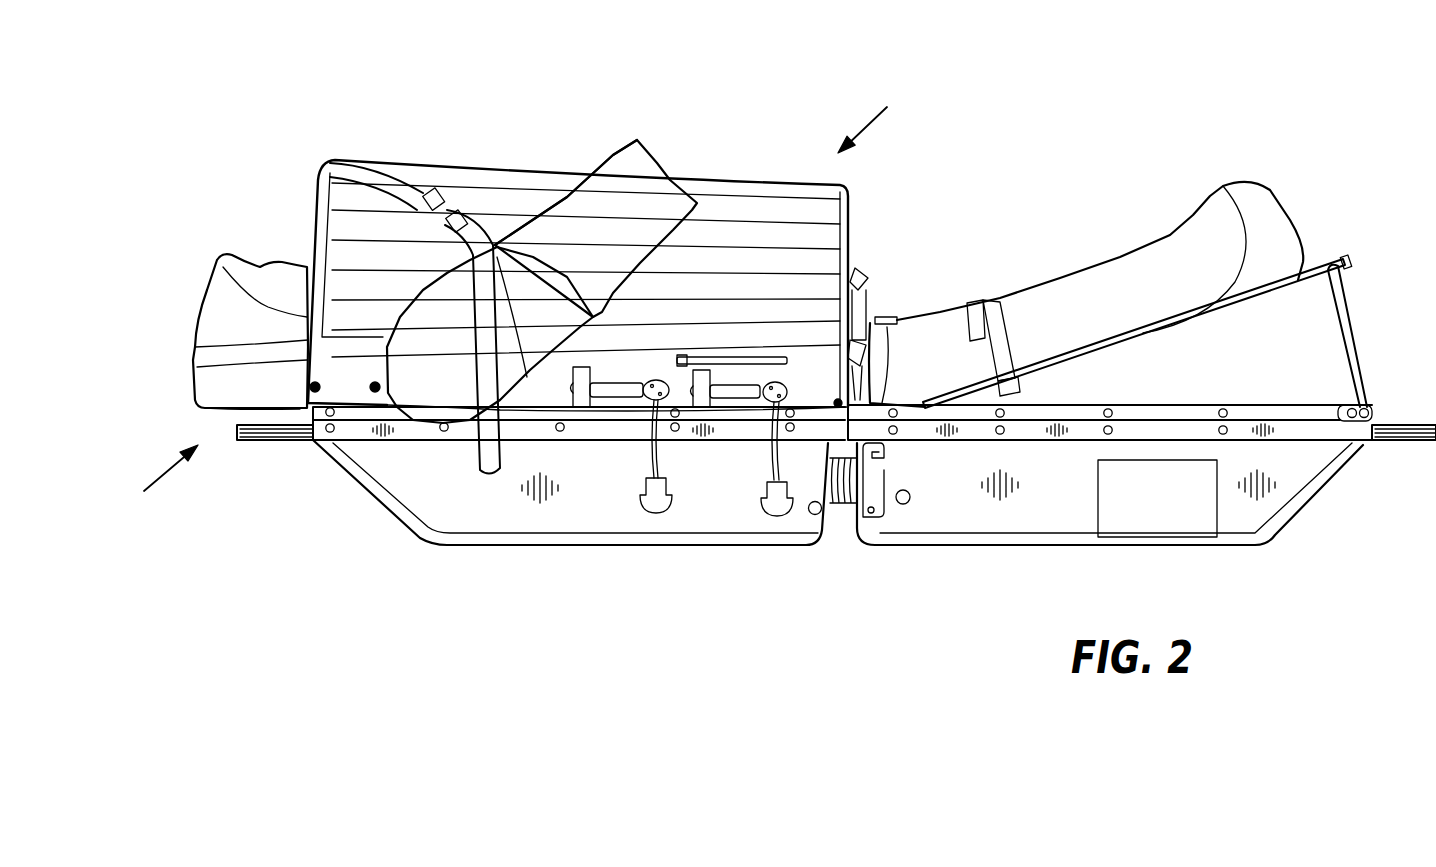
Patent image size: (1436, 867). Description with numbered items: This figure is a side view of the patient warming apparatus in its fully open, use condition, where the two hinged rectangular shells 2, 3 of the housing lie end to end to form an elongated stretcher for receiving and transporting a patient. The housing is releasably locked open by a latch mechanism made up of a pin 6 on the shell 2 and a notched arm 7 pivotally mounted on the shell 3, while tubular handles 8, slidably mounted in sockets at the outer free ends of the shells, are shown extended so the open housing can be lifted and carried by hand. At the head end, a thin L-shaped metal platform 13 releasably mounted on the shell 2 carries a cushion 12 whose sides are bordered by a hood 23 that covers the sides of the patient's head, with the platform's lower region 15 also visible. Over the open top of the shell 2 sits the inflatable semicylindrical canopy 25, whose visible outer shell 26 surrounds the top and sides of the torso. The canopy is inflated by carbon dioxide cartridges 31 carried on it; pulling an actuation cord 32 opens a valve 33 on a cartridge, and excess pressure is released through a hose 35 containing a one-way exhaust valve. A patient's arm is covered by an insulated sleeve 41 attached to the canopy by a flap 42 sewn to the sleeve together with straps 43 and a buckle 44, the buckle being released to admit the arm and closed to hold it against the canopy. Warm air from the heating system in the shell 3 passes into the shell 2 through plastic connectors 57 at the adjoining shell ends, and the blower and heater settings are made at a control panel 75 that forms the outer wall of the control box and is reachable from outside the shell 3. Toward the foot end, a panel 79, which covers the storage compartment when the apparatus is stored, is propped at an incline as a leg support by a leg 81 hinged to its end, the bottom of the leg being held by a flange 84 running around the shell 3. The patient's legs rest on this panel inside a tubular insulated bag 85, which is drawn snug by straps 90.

The shell 2 is at (528, 545).
The shell 3 is at (1043, 545).
The pin 6 is at (810, 514).
The notched arm 7 is at (872, 473).
The tubular handles 8 is at (277, 442).
The cushion 12 is at (220, 381).
The platform 13 is at (154, 490).
The head support base bottom 15 is at (215, 409).
The hood 23 is at (240, 256).
The canopy 25 is at (879, 114).
The outer shell 26 is at (483, 186).
The CO2 cartridges 31 is at (617, 392).
The actuation cord 32 is at (773, 475).
The valve 33 is at (650, 378).
The hose 35 is at (743, 358).
The insulated sleeves 41 is at (637, 152).
The flap 42 is at (523, 321).
The straps 43 is at (397, 160).
The buckles 44 is at (518, 240).
The plastic connectors 57 is at (838, 505).
The control panel 75 is at (1138, 511).
The panel 79 is at (1228, 303).
The leg 81 is at (1342, 321).
The flange 84 is at (1283, 413).
The insulated bag 85 is at (1040, 284).
The straps 90 is at (973, 306).